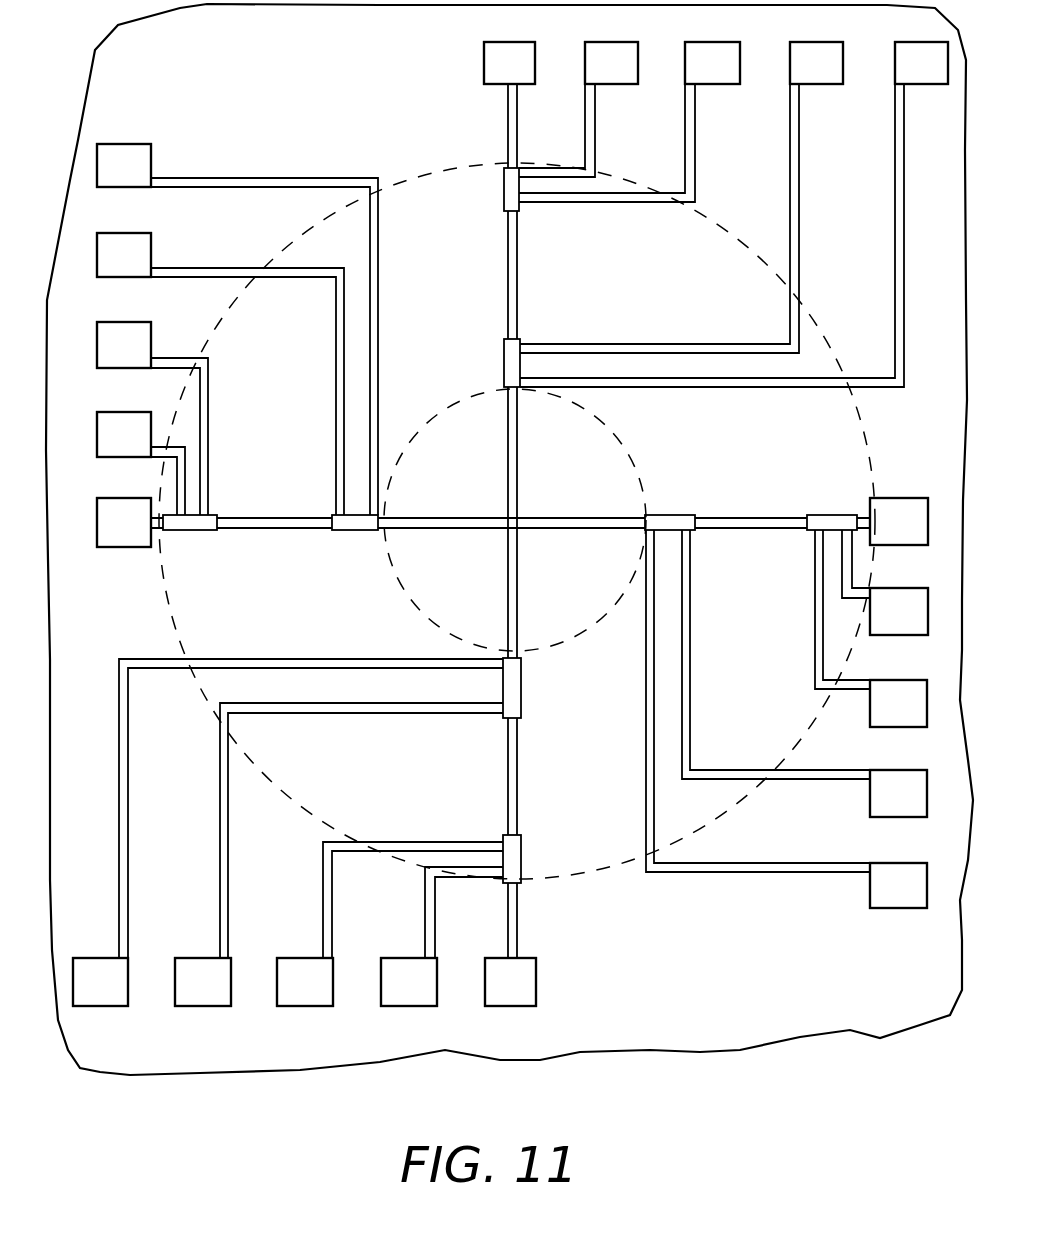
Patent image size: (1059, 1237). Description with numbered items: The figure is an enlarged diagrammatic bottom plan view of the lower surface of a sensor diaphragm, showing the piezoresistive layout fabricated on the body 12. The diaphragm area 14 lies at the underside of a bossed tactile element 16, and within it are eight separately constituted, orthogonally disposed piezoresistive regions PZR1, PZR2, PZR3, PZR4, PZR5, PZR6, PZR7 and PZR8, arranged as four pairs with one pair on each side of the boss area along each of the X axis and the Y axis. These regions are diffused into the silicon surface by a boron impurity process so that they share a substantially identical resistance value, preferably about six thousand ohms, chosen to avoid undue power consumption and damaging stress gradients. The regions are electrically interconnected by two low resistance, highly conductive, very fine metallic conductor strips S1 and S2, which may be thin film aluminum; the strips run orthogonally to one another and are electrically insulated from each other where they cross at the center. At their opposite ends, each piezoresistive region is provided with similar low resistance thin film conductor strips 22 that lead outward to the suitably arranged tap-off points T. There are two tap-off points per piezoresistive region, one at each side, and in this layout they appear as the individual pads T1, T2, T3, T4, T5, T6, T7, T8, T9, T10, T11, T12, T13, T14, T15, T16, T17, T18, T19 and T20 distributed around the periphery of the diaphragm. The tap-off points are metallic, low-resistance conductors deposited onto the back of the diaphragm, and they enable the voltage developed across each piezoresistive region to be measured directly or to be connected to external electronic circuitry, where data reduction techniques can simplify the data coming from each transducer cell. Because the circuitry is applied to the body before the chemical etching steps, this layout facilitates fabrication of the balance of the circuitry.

The body 12 is at (152, 80).
The diaphragm area 14 is at (168, 604).
The bossed tactile element 16 is at (616, 437).
The thin film conductor strip 22 is at (178, 456).
The metallic conductor strip S1 is at (268, 532).
The metallic conductor strip S2 is at (432, 223).
The tap-off point T is at (97, 268).
The X axis X is at (92, 523).
The Y axis Y is at (509, 50).
The tap-off point T1 is at (509, 63).
The tap-off point T2 is at (611, 63).
The tap-off point T3 is at (712, 63).
The tap-off point T4 is at (816, 63).
The tap-off point T5 is at (921, 63).
The tap-off point T6 is at (899, 521).
The tap-off point T7 is at (899, 611).
The tap-off point T8 is at (898, 703).
The tap-off point T9 is at (898, 793).
The tap-off point T10 is at (898, 885).
The tap-off point T11 is at (510, 982).
The tap-off point T12 is at (409, 982).
The tap-off point T13 is at (305, 982).
The tap-off point T14 is at (203, 982).
The tap-off point T15 is at (100, 982).
The tap-off point T16 is at (124, 522).
The tap-off point T17 is at (124, 434).
The tap-off point T18 is at (124, 345).
The tap-off point T19 is at (124, 255).
The tap-off point T20 is at (124, 165).
The piezoresistive region PZR1 is at (213, 530).
The piezoresistive region PZR2 is at (372, 530).
The piezoresistive region PZR3 is at (655, 515).
The piezoresistive region PZR4 is at (832, 515).
The piezoresistive region PZR5 is at (567, 845).
The piezoresistive region PZR6 is at (521, 683).
The piezoresistive region PZR7 is at (504, 357).
The piezoresistive region PZR8 is at (504, 185).